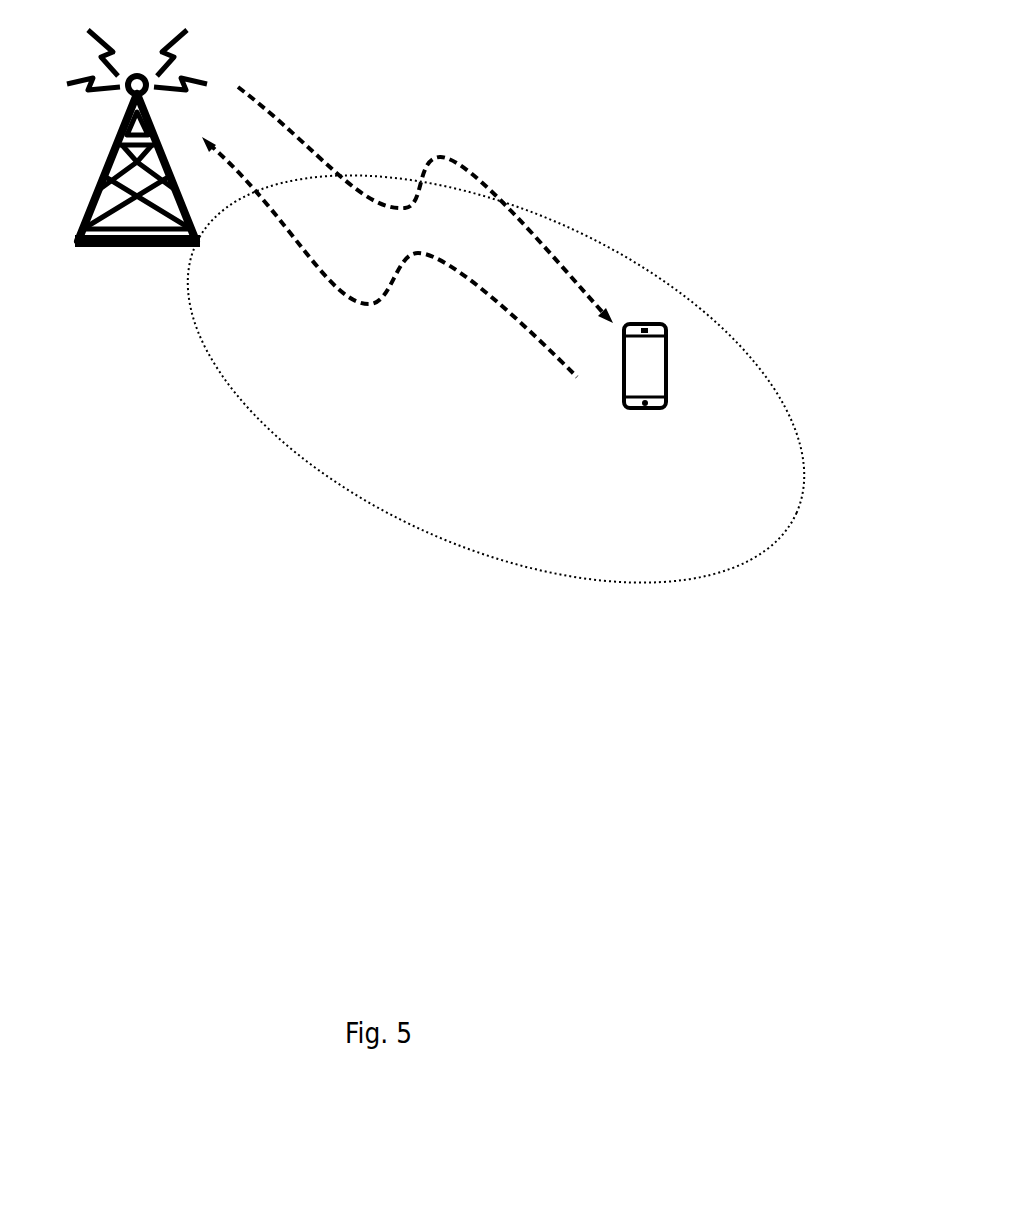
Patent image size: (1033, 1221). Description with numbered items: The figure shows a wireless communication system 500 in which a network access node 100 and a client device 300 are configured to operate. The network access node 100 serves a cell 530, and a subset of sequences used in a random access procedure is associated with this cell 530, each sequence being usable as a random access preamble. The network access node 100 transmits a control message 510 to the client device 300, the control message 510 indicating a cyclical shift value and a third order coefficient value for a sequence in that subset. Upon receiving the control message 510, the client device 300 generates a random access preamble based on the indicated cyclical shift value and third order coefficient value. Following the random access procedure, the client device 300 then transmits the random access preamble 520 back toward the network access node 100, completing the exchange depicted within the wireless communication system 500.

The network access node 100 is at (105, 250).
The client device 300 is at (643, 412).
The wireless communication system 500 is at (688, 78).
The control message 510 is at (425, 205).
The random access preamble 520 is at (389, 257).
The cell 530 is at (308, 457).